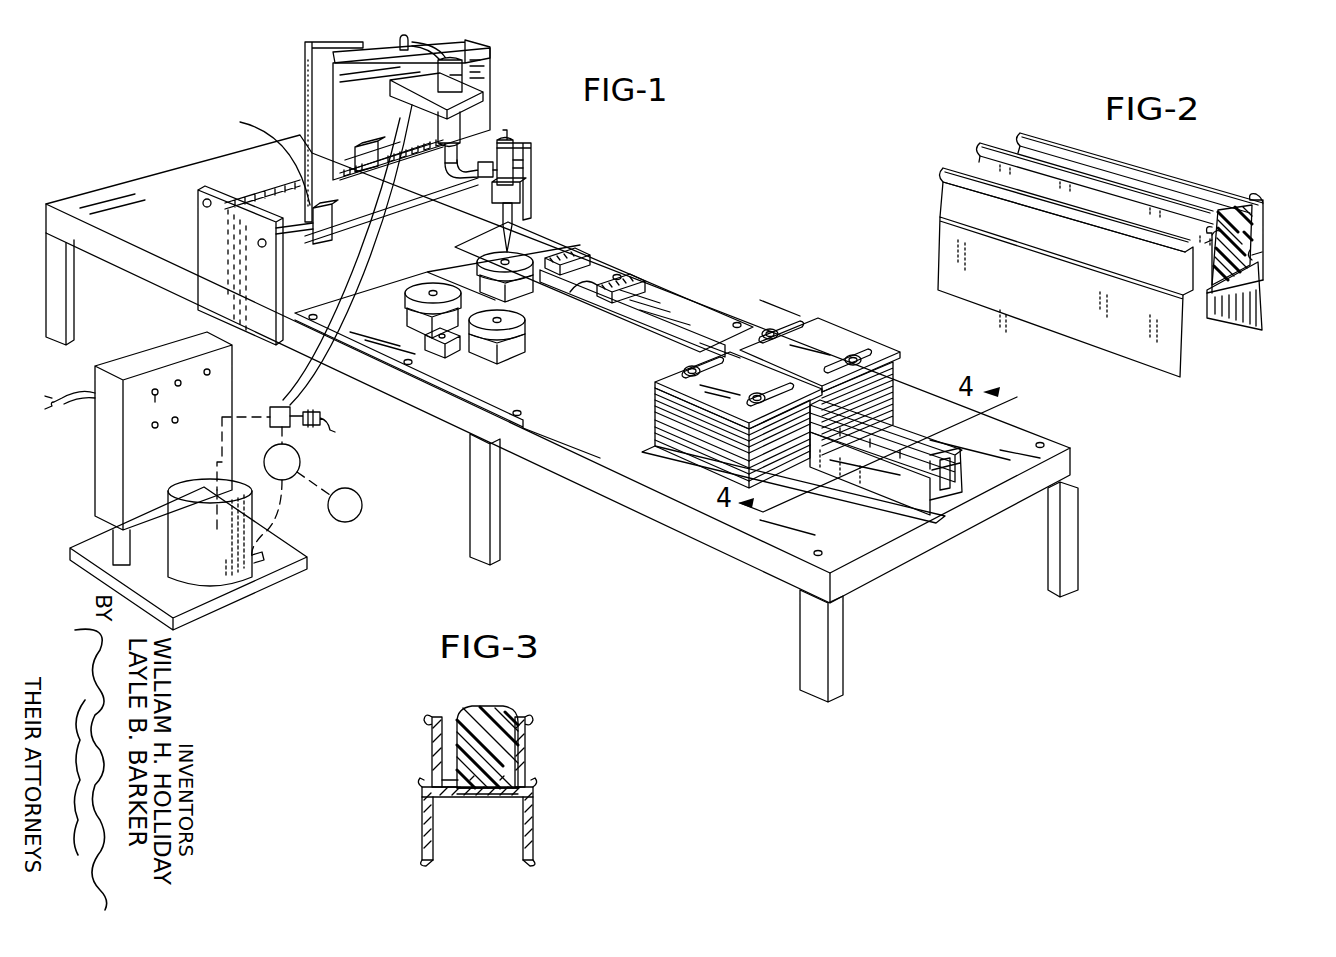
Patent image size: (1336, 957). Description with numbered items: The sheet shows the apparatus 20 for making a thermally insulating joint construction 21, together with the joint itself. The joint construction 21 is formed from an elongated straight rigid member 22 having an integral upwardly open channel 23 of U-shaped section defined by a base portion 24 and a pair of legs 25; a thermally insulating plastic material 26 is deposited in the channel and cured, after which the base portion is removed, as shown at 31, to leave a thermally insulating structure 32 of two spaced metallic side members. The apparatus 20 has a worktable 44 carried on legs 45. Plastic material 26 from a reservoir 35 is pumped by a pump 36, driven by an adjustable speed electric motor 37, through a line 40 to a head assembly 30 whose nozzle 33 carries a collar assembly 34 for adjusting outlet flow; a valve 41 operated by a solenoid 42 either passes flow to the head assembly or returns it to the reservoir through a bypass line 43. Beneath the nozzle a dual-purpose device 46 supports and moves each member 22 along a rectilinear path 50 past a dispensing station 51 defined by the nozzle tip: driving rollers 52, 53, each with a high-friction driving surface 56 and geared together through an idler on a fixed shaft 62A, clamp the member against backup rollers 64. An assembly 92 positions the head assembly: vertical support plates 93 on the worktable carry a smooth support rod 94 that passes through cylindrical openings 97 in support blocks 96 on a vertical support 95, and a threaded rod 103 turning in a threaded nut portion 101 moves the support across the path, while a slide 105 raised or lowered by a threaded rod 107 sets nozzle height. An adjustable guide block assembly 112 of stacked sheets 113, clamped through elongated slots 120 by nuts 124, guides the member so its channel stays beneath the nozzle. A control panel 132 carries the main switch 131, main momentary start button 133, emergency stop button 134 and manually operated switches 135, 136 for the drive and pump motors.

In FIG. 1, the apparatus 20 is at (633, 195).
In FIG. 1, the joint construction 21 is at (920, 412).
In FIG. 2, the joint construction 21 is at (1248, 154).
In FIG. 1, the elongated straight rigid member 22 is at (912, 495).
In FIG. 2, the elongated straight rigid member 22 is at (1170, 350).
In FIG. 1, the upwardly open channel 23 is at (951, 470).
In FIG. 2, the upwardly open channel 23 is at (1250, 254).
In FIG. 2, the base portion 24 is at (1255, 300).
In FIG. 2, the legs 25 is at (1252, 232).
In FIG. 2, the thermally insulating plastic material 26 is at (1232, 217).
In FIG. 3, the thermally insulating plastic material 26 is at (497, 757).
In FIG. 1, the head assembly 30 is at (478, 146).
In FIG. 3, the removed base portion 31 is at (488, 804).
In FIG. 3, the thermally insulating structure 32 is at (390, 779).
In FIG. 1, the nozzle 33 is at (514, 224).
In FIG. 1, the collar assembly 34 is at (521, 190).
In FIG. 1, the reservoir 35 is at (220, 578).
In FIG. 1, the pump 36 is at (300, 462).
In FIG. 1, the adjustable speed electric motor 37 is at (362, 505).
In FIG. 1, the line 40 is at (288, 372).
In FIG. 1, the valve 41 is at (285, 407).
In FIG. 1, the solenoid 42 is at (333, 432).
In FIG. 1, the bypass line 43 is at (222, 462).
In FIG. 1, the worktable 44 is at (651, 286).
In FIG. 1, the legs 45 is at (60, 300).
In FIG. 1, the dual-purpose device 46 is at (565, 273).
In FIG. 1, the rectilinear path 50 is at (455, 257).
In FIG. 1, the dispensing station 51 is at (493, 293).
In FIG. 1, the driving roller 52 is at (507, 332).
In FIG. 1, the driving roller 53 is at (418, 298).
In FIG. 1, the high-friction driving surface 56 is at (413, 288).
In FIG. 1, the fixed shaft 62A is at (440, 348).
In FIG. 1, the backup roller 64 is at (527, 260).
In FIG. 1, the positioning assembly 92 is at (292, 62).
In FIG. 1, the vertical support plates 93 is at (198, 226).
In FIG. 1, the support rod 94 is at (302, 238).
In FIG. 1, the vertical support 95 is at (312, 68).
In FIG. 1, the support blocks 96 is at (368, 186).
In FIG. 1, the cylindrical opening 97 is at (310, 254).
In FIG. 1, the threaded nut portion 101 is at (386, 165).
In FIG. 1, the threaded rod 103 is at (236, 197).
In FIG. 1, the slide 105 is at (490, 53).
In FIG. 1, the threaded rod 107 is at (462, 84).
In FIG. 1, the adjustable guide block assembly 112 is at (773, 288).
In FIG. 1, the sheets 113 is at (716, 466).
In FIG. 1, the elongated slots 120 is at (718, 386).
In FIG. 1, the nut 124 is at (665, 385).
In FIG. 1, the main switch 131 is at (155, 388).
In FIG. 1, the control panel 132 is at (99, 480).
In FIG. 1, the main momentary start button 133 is at (178, 380).
In FIG. 1, the emergency stop button 134 is at (206, 369).
In FIG. 1, the manually operated control switch 135 is at (152, 426).
In FIG. 1, the manually operated switch 136 is at (174, 423).